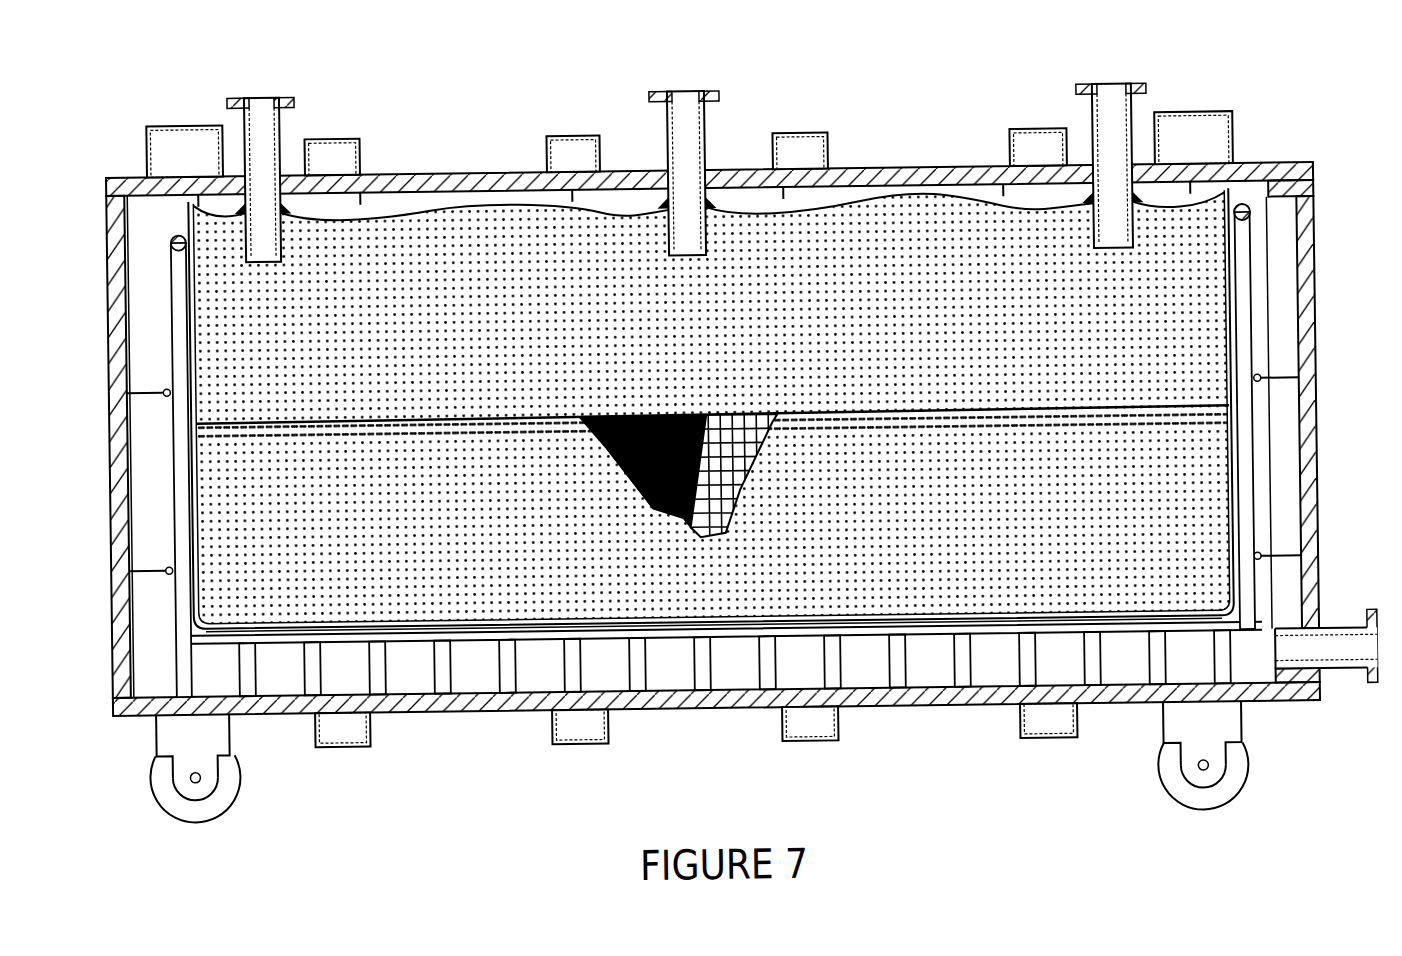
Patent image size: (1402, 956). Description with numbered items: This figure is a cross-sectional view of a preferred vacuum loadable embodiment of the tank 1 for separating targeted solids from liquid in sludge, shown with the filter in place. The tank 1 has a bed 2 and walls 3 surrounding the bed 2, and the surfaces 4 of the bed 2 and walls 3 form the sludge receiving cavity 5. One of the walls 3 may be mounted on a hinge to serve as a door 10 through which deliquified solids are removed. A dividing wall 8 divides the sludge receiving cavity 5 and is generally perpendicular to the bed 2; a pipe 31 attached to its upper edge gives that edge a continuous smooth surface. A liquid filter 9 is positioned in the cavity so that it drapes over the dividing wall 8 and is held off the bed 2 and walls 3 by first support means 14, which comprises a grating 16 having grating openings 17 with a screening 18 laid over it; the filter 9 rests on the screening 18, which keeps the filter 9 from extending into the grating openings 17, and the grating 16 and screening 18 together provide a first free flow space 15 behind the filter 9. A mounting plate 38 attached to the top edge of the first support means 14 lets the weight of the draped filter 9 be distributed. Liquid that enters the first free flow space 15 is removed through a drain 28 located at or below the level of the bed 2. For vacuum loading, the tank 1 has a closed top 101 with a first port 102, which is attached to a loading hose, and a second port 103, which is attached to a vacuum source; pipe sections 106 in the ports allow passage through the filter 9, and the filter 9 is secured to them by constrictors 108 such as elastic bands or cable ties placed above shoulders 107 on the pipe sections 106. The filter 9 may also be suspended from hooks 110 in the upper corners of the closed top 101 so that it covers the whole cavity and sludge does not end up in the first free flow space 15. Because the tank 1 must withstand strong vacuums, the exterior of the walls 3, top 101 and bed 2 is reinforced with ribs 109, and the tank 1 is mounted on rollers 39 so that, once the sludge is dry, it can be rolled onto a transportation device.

The tank 1 is at (961, 82).
The bed 2 is at (646, 717).
The walls 3 is at (105, 347).
The surfaces 4 is at (126, 655).
The sludge receiving cavity 5 is at (472, 273).
The dividing wall 8 is at (1069, 420).
The liquid filter 9 is at (887, 585).
The door 10 is at (1317, 246).
The first support means 14 is at (1237, 410).
The first free flow space 15 is at (1260, 350).
The grating 16 is at (695, 545).
The grating openings 17 is at (1215, 315).
The screening 18 is at (647, 519).
The drain 28 is at (1269, 660).
The pipe 31 is at (722, 541).
The mounting plate 38 is at (171, 237).
The rollers 39 is at (1234, 807).
The closed top 101 is at (903, 176).
The first port 102 is at (262, 202).
The second port 103 is at (695, 213).
The pipe sections 106 is at (284, 101).
The shoulders 107 is at (367, 211).
The constrictors 108 is at (665, 214).
The ribs 109 is at (567, 146).
The hooks 110 is at (1240, 222).